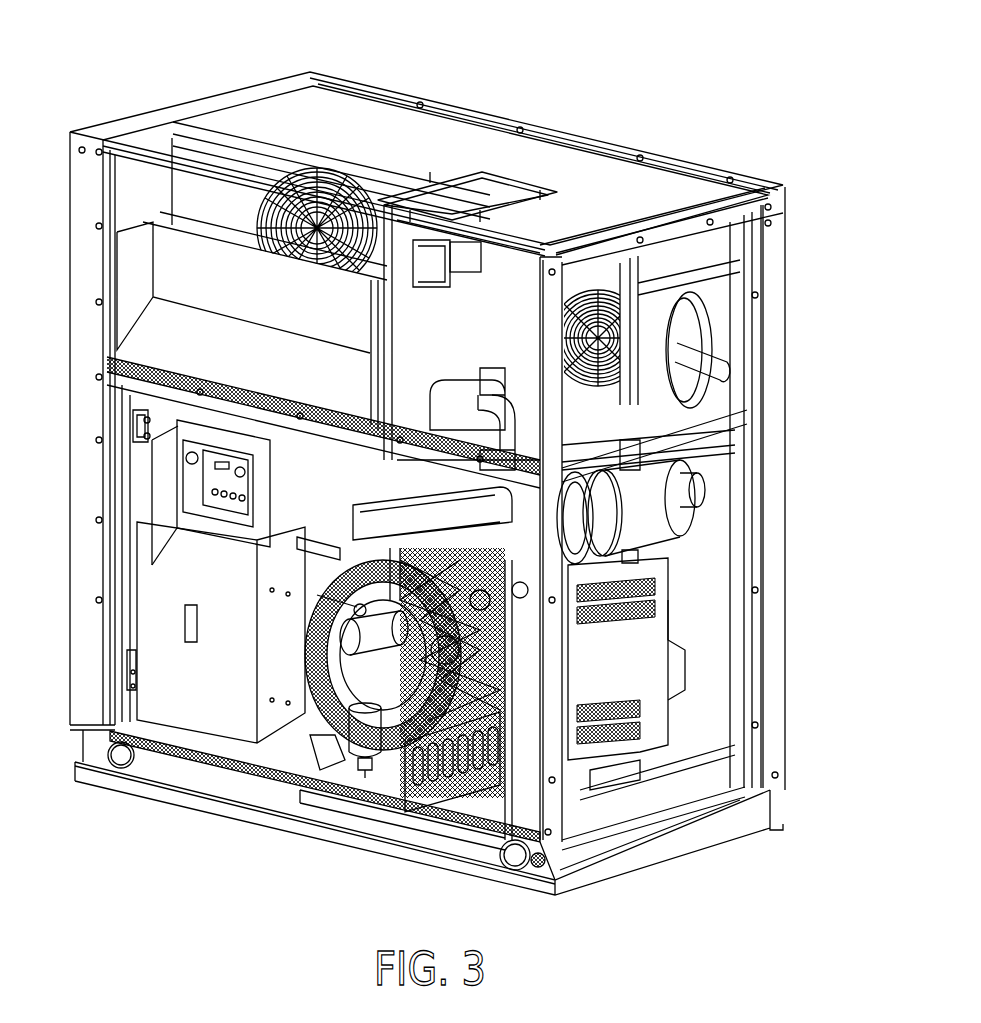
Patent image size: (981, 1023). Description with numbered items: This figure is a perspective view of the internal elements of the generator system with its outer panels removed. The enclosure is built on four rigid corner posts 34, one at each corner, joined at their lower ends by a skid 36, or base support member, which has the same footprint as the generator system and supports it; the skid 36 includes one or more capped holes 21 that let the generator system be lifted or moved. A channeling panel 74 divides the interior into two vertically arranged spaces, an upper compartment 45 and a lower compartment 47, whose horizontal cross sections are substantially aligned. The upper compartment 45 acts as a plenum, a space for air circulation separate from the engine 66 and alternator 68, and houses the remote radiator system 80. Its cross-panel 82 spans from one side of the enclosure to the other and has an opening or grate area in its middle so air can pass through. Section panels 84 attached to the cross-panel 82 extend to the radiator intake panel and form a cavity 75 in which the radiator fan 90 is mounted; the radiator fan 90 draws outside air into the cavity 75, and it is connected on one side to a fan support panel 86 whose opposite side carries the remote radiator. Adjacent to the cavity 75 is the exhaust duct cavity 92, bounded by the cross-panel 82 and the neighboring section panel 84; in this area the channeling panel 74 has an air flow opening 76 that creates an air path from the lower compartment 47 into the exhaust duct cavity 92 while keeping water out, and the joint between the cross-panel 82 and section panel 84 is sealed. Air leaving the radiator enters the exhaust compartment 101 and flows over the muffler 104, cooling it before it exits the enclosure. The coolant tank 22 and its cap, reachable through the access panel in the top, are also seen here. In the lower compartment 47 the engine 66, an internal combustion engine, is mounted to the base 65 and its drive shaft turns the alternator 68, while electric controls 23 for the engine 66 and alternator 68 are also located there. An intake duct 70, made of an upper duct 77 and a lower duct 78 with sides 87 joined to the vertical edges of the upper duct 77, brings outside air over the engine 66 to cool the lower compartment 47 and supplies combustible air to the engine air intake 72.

The holes 21 is at (120, 755).
The coolant tank 22 is at (478, 270).
The electric controls 23 is at (223, 477).
The corner posts 34 is at (90, 420).
The skid 36 is at (640, 850).
The upper compartment 45 is at (60, 272).
The lower compartment 47 is at (55, 616).
The base 65 is at (470, 775).
The engine 66 is at (443, 683).
The alternator 68 is at (222, 705).
The intake duct 70 is at (145, 484).
The engine air intake 72 is at (347, 453).
The channeling panel 74 is at (110, 375).
The cavity 75 is at (330, 165).
The air flow opening 76 is at (490, 410).
The upper duct 77 is at (160, 505).
The lower duct 78 is at (130, 668).
The remote radiator system 80 is at (385, 203).
The cross-panel 82 is at (192, 152).
The section panels 84 is at (463, 383).
The fan support panel 86 is at (708, 208).
The sides 87 is at (140, 440).
The radiator fan 90 is at (267, 220).
The exhaust duct cavity 92 is at (553, 238).
The exhaust compartment 101 is at (445, 128).
The muffler 104 is at (695, 330).